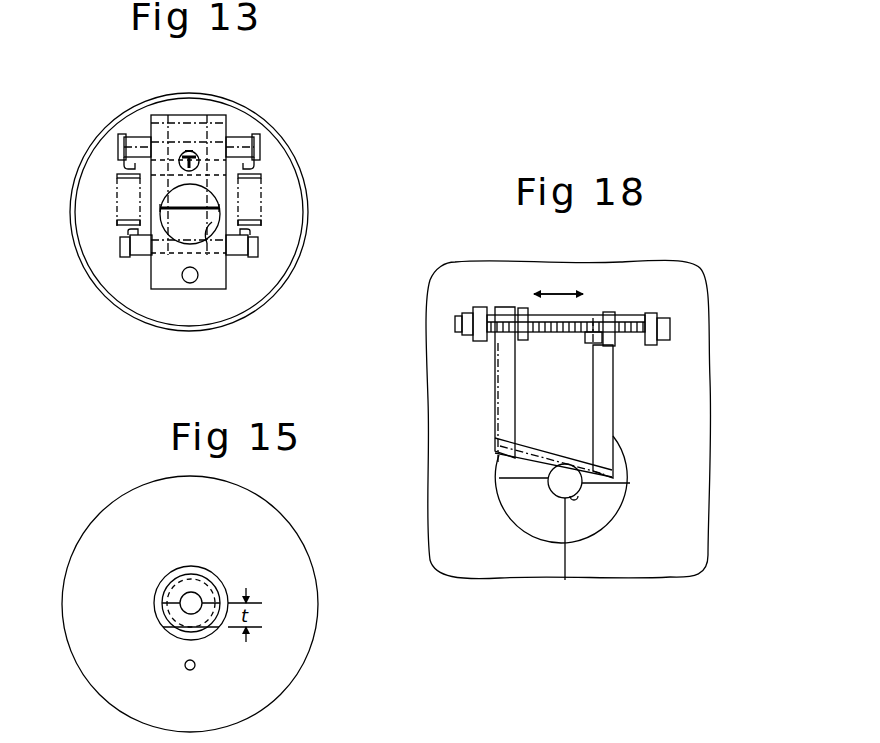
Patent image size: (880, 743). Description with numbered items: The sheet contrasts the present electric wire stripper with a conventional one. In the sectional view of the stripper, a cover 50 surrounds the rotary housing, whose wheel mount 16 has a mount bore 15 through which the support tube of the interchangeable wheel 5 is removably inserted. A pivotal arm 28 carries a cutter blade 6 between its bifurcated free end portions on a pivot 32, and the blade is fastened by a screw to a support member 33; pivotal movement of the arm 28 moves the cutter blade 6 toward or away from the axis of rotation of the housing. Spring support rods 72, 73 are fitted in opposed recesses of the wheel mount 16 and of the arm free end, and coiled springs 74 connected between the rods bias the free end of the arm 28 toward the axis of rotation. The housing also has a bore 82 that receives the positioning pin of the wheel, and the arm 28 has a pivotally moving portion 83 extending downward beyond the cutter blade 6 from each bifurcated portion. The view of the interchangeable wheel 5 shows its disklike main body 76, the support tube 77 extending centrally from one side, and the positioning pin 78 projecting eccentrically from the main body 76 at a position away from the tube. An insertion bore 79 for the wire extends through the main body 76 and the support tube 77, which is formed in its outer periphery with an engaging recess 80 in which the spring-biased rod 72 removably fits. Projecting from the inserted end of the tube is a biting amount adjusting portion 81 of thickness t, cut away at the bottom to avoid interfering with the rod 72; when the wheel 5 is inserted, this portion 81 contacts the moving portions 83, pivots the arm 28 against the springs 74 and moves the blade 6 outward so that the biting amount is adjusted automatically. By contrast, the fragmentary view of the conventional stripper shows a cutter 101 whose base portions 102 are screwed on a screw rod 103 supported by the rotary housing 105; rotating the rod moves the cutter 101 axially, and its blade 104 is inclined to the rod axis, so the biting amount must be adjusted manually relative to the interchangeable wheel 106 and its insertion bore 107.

In FIG. 13, the cutter blade 6 is at (180, 204).
In FIG. 13, the mount bore 15 is at (206, 242).
In FIG. 13, the wheel mount 16 is at (160, 276).
In FIG. 13, the pivotal arm 28 is at (218, 112).
In FIG. 13, the pivot 32 is at (180, 118).
In FIG. 13, the support member 33 is at (193, 114).
In FIG. 13, the cover 50 is at (114, 306).
In FIG. 13, the spring support rod 72 is at (238, 256).
In FIG. 13, the spring support rod 73 is at (234, 142).
In FIG. 13, the coiled springs 74 is at (118, 222).
In FIG. 13, the bore 82 is at (190, 283).
In FIG. 13, the pivotally moving portion 83 is at (180, 204).
In FIG. 15, the interchangeable wheel 5 is at (307, 548).
In FIG. 15, the disklike main body 76 is at (305, 637).
In FIG. 15, the support tube 77 is at (185, 567).
In FIG. 15, the positioning pin 78 is at (193, 670).
In FIG. 15, the insertion bore 79 is at (203, 598).
In FIG. 15, the engaging recess 80 is at (204, 578).
In FIG. 15, the biting amount adjusting portion 81 is at (166, 617).
In FIG. 18, the cutter 101 is at (495, 388).
In FIG. 18, the base portions 102 is at (524, 307).
In FIG. 18, the screw rod 103 is at (633, 317).
In FIG. 18, the blade 104 is at (572, 470).
In FIG. 18, the rotary housing 105 is at (698, 440).
In FIG. 18, the interchangeable wheel 106 is at (519, 513).
In FIG. 18, the insertion bore 107 is at (570, 554).